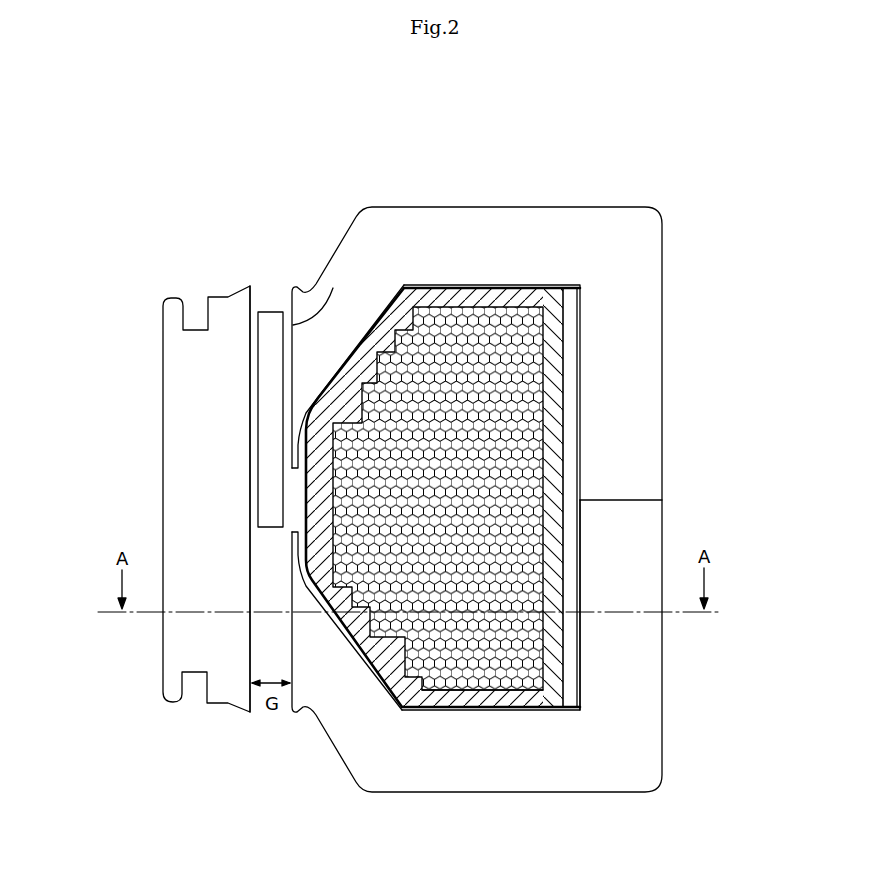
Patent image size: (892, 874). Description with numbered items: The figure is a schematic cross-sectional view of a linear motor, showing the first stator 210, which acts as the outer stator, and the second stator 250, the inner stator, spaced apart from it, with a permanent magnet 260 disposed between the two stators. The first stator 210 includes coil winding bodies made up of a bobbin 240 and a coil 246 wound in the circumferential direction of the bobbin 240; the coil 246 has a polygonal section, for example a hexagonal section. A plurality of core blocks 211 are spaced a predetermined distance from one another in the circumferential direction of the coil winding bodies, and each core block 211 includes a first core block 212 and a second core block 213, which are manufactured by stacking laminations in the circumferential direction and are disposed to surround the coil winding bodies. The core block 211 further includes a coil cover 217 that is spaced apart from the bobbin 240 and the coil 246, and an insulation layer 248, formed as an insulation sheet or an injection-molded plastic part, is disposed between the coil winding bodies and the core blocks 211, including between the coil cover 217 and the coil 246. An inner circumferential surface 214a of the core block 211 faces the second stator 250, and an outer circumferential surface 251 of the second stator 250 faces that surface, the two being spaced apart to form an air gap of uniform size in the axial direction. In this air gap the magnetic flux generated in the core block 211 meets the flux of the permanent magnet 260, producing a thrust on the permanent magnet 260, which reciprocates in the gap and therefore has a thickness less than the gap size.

The first stator 210 is at (348, 180).
The core block 211 is at (743, 395).
The first core block 212 is at (657, 403).
The second core block 213 is at (657, 532).
The inner circumferential surface 214a is at (333, 288).
The coil cover 217 is at (580, 345).
The bobbin 240 is at (313, 593).
The coil 246 is at (480, 315).
The insulation layer 248 is at (553, 703).
The second stator 250 is at (175, 408).
The outer circumferential surface 251 is at (248, 508).
The permanent magnet 260 is at (272, 312).